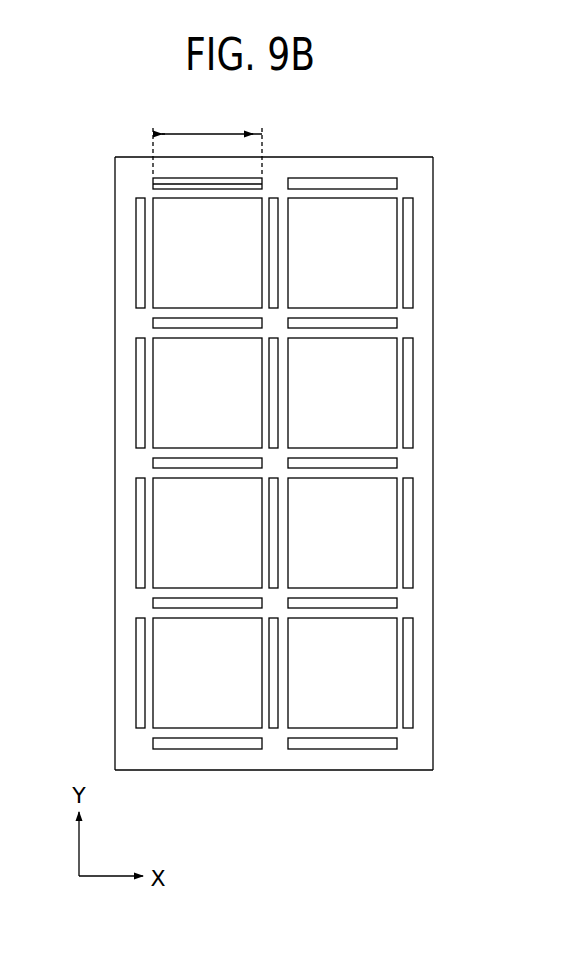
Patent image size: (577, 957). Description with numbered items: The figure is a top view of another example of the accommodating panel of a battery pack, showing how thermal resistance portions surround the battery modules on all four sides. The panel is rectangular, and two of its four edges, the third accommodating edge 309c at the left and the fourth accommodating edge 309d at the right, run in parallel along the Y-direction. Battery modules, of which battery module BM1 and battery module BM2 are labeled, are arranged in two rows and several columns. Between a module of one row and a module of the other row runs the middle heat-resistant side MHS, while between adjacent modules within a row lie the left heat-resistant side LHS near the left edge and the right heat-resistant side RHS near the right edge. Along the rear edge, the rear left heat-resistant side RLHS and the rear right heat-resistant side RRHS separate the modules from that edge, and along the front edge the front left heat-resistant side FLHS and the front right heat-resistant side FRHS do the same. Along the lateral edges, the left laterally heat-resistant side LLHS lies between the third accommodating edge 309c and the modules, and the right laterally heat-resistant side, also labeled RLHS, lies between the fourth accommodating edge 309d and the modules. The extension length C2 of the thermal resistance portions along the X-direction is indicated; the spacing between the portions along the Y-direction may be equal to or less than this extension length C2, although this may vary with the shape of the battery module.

The third accommodating edge 309c is at (115, 540).
The fourth accommodating edge 309d is at (433, 540).
The battery module BM1 is at (342, 533).
The battery module BM2 is at (342, 673).
The left laterally heat-resistant side LLHS is at (134, 249).
The middle heat-resistant side MHS is at (274, 196).
The rear left heat-resistant side RLHS is at (151, 180).
The rear right heat-resistant side RRHS is at (400, 180).
The left heat-resistant side LHS is at (151, 461).
The right heat-resistant side RHS is at (400, 461).
The front left heat-resistant side FLHS is at (151, 741).
The front right heat-resistant side FRHS is at (400, 741).
The extension length C2 is at (207, 143).